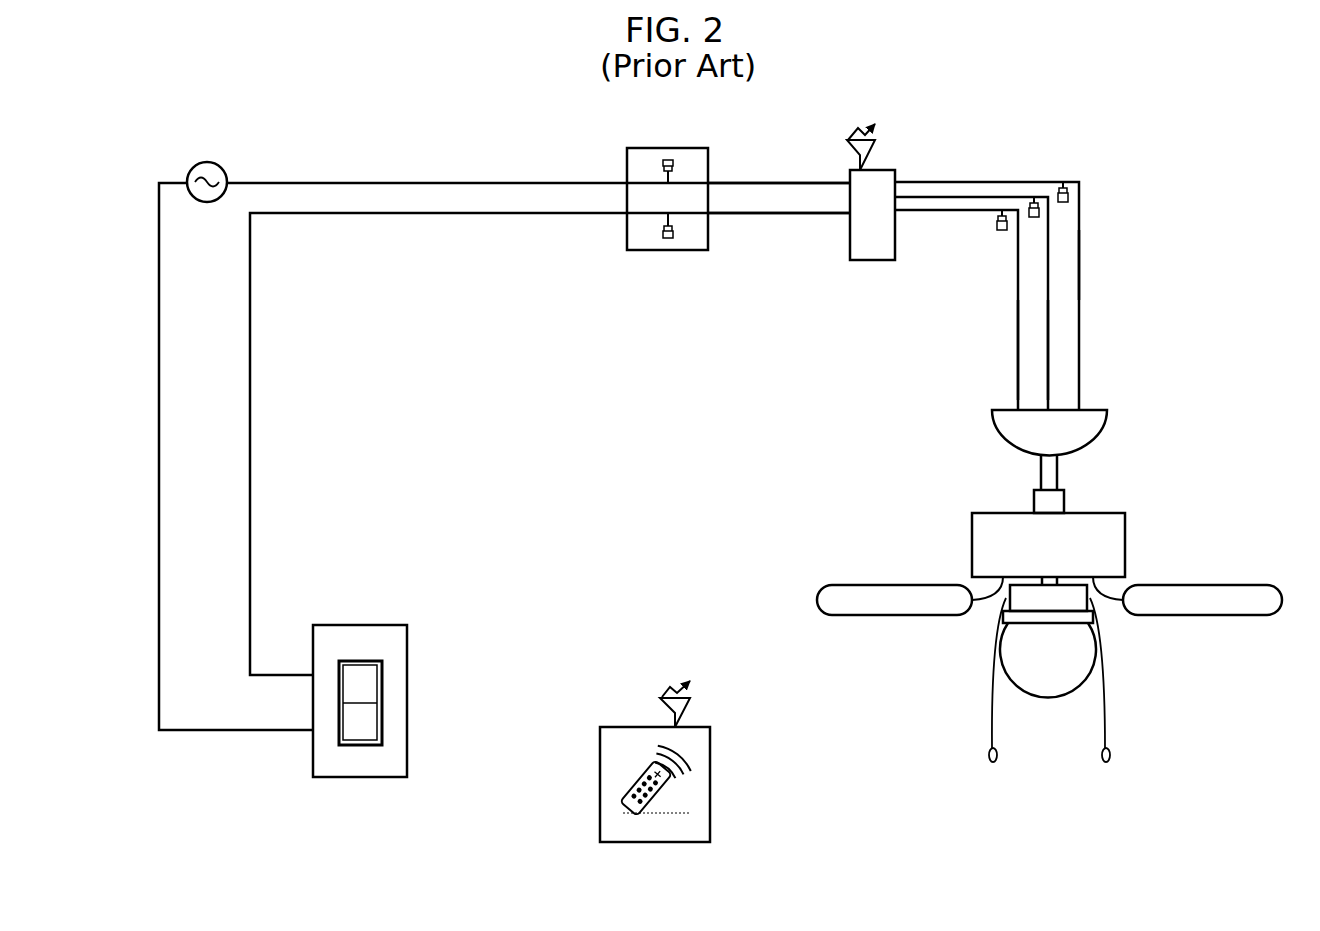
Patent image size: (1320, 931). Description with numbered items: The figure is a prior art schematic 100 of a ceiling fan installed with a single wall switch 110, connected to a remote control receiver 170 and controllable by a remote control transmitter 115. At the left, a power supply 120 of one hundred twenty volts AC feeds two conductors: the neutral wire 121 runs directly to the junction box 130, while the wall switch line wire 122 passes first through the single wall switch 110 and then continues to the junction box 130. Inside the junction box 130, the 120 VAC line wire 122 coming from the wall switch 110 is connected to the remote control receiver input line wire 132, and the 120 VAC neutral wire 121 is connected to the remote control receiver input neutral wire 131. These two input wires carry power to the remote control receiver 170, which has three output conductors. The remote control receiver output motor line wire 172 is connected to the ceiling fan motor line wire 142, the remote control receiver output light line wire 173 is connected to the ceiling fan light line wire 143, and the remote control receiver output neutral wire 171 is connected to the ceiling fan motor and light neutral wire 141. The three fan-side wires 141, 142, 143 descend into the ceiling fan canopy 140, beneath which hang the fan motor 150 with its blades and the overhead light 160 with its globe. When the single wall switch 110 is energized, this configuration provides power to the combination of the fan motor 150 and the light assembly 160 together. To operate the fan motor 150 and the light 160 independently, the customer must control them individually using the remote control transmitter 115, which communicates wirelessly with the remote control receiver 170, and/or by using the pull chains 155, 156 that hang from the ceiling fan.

The prior art schematic 100 is at (1180, 98).
The single wall switch 110 is at (385, 709).
The remote control transmitter 115 is at (712, 752).
The power supply (120 VAC) 120 is at (258, 138).
The neutral wire 121 is at (390, 180).
The wall switch line wire 122 is at (390, 215).
The junction box 130 is at (650, 245).
The remote control receiver input neutral wire 131 is at (748, 178).
The remote control receiver input line wire 132 is at (748, 215).
The ceiling fan canopy 140 is at (1005, 440).
The ceiling fan motor and light neutral wire 141 is at (1082, 225).
The ceiling fan motor line wire 142 is at (1052, 340).
The ceiling fan light line wire 143 is at (1017, 280).
The fan motor 150 is at (997, 543).
The pull chain 155 is at (988, 762).
The pull chain 156 is at (1112, 762).
The overhead light 160 is at (1030, 657).
The remote control receiver 170 is at (875, 252).
The remote control receiver output neutral wire 171 is at (988, 180).
The remote control receiver output motor line wire 172 is at (922, 195).
The remote control receiver output light line wire 173 is at (972, 212).